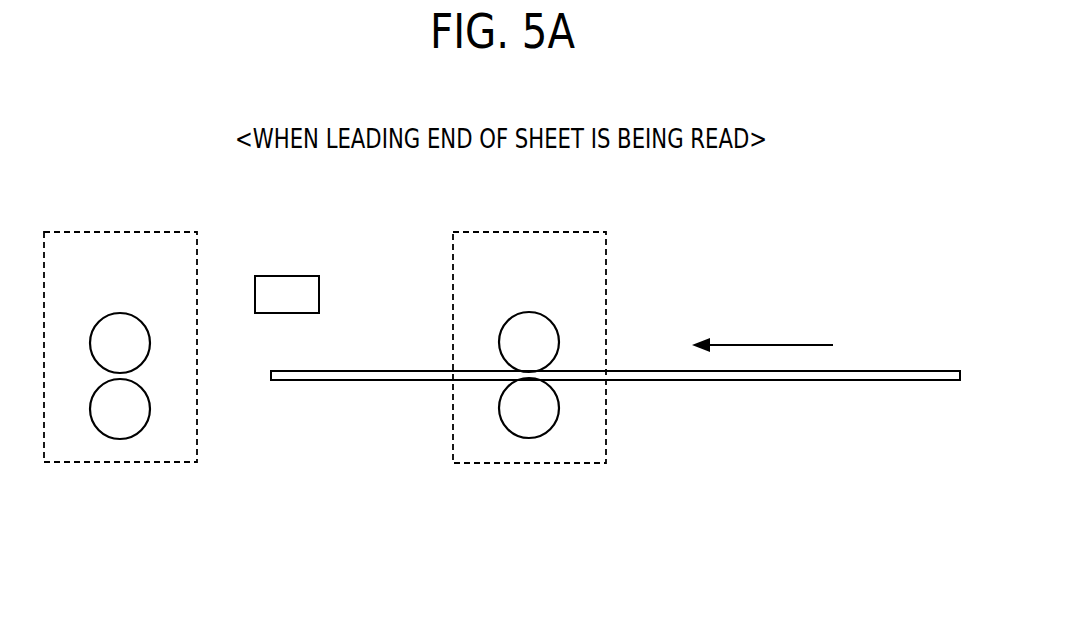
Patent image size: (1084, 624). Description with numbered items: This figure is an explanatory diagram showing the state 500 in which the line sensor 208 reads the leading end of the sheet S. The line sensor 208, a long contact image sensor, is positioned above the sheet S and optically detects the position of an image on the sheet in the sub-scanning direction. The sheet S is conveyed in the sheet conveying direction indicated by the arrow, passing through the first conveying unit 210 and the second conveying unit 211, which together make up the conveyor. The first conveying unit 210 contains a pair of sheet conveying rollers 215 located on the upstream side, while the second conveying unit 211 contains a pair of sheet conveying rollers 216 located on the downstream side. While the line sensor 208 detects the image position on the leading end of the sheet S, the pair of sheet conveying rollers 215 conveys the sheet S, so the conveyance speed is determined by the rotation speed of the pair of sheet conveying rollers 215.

The sheet reading state 500 is at (801, 226).
The second conveying unit 211 is at (128, 231).
The pair of sheet conveying rollers 216 is at (150, 345).
The line sensor 208 is at (320, 292).
The first conveying unit 210 is at (578, 213).
The pair of sheet conveying rollers 215 is at (559, 333).
The sheet S is at (903, 371).